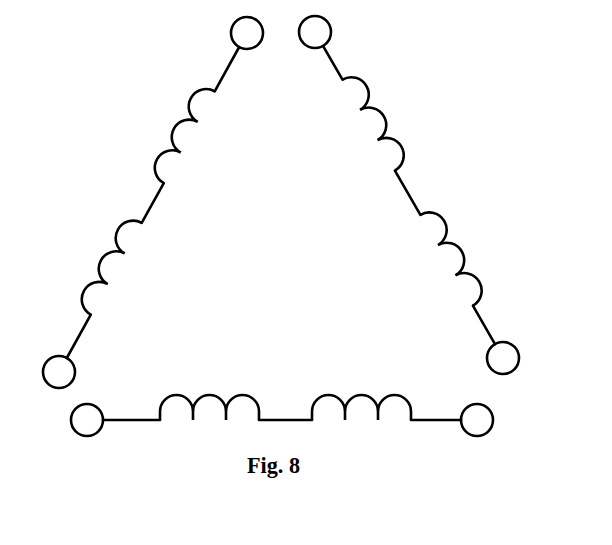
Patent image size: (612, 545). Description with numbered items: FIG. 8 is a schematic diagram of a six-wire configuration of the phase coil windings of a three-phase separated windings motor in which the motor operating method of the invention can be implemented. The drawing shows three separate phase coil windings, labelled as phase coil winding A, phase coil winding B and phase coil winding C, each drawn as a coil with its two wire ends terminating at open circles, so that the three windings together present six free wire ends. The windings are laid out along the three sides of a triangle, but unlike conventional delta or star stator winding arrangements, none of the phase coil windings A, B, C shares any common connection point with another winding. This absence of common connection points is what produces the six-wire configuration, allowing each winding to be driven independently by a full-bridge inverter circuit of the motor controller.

The phase A winding A is at (361, 384).
The phase B winding B is at (383, 121).
The phase C winding C is at (101, 264).